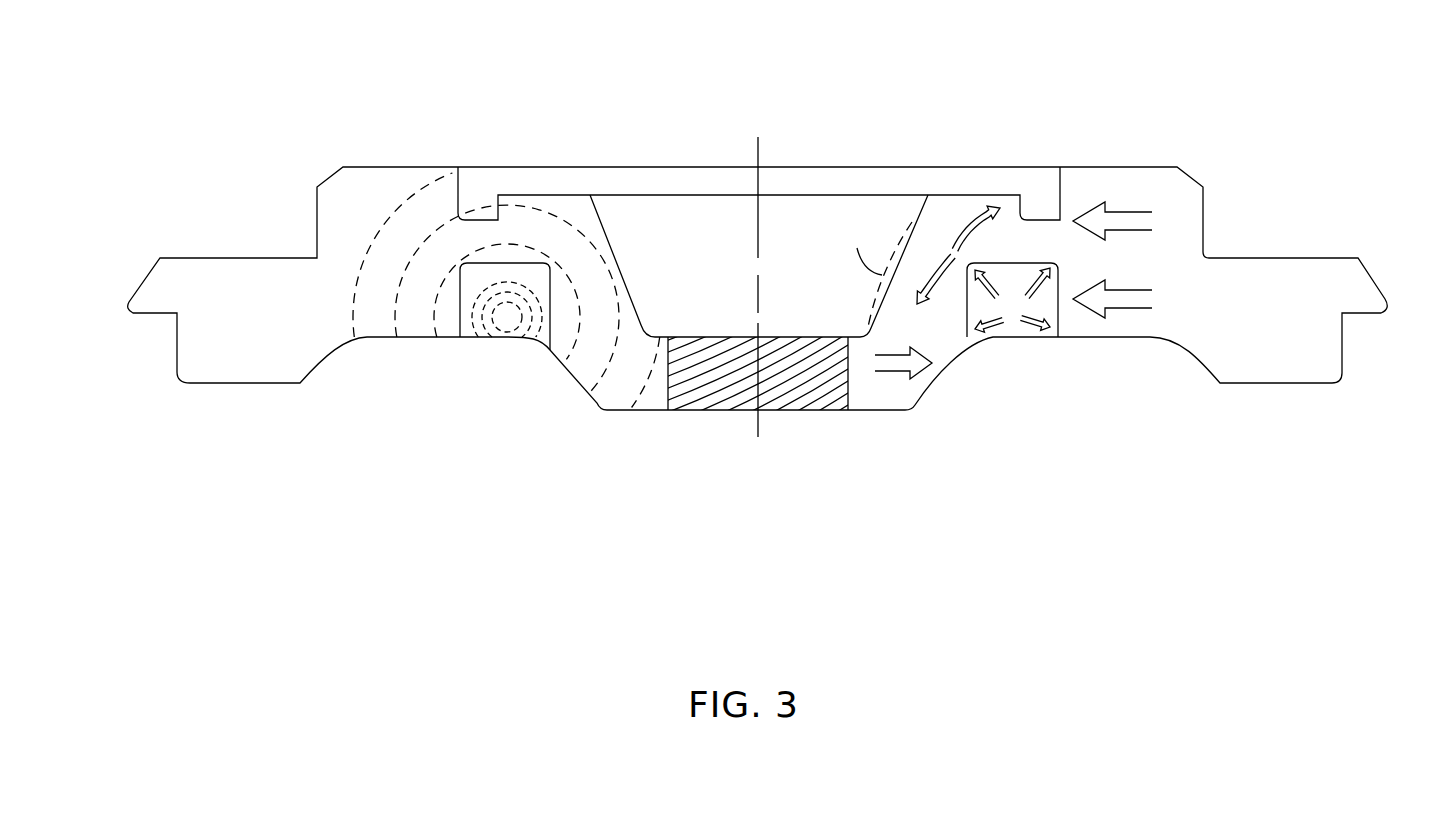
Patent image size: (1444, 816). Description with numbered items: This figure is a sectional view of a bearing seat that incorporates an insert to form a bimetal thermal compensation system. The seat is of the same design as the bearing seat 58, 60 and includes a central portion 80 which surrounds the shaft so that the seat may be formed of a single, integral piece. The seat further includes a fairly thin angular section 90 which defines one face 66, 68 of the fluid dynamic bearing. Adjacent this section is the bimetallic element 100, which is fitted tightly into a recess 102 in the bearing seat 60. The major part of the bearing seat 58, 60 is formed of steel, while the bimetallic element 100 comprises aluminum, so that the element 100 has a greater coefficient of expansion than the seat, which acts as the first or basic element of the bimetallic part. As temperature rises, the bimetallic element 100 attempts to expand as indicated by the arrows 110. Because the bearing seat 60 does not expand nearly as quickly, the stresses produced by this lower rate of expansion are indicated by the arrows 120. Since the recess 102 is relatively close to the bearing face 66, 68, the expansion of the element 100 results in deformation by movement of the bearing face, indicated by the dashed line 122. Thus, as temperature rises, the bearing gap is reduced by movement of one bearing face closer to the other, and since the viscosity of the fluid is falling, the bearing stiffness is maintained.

The bearing seat 58 is at (776, 287).
The bearing seat 60 is at (1178, 235).
The bearing face 66 is at (759, 185).
The bearing face 68 is at (617, 263).
The central portion 80 is at (707, 388).
The angular section 90 is at (572, 232).
The bimetallic element 100 is at (995, 383).
The recess 102 is at (1058, 323).
The arrows 110 is at (1012, 315).
The arrows 120 is at (988, 212).
The dashed line 122 is at (897, 240).